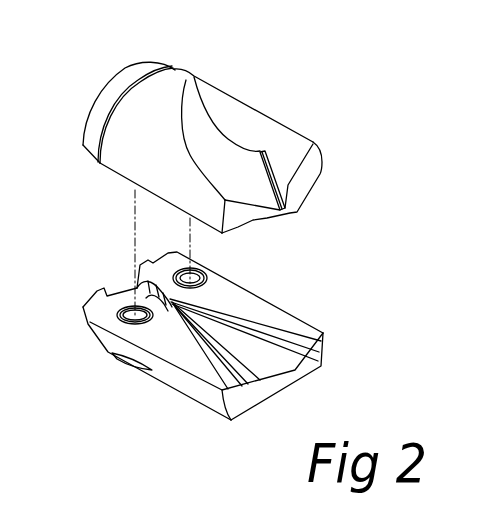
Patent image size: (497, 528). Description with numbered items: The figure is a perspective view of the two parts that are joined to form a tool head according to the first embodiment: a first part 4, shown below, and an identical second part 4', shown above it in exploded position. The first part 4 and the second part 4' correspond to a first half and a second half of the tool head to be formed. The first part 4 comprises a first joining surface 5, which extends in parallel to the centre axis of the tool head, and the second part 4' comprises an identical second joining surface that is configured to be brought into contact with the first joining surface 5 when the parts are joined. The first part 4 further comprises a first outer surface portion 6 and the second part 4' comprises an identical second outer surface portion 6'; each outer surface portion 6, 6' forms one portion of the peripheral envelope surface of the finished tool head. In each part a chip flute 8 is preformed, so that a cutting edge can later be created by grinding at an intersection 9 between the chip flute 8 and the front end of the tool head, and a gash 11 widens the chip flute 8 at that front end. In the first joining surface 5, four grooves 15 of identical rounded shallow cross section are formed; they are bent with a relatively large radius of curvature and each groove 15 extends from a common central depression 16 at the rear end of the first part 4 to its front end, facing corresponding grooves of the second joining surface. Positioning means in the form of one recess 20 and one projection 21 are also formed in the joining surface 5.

The second part 4' is at (240, 147).
The second outer surface portion 6' is at (165, 86).
The chip flute 8 is at (246, 128).
The gash 11 is at (208, 150).
The intersection 9 is at (305, 166).
The first part 4 is at (240, 336).
The first joining surface 5 is at (242, 306).
The first outer surface portion 6 is at (160, 391).
The common central depression 16 is at (140, 288).
The projection 21 is at (195, 278).
The recess 20 is at (128, 318).
The grooves 15 is at (258, 378).